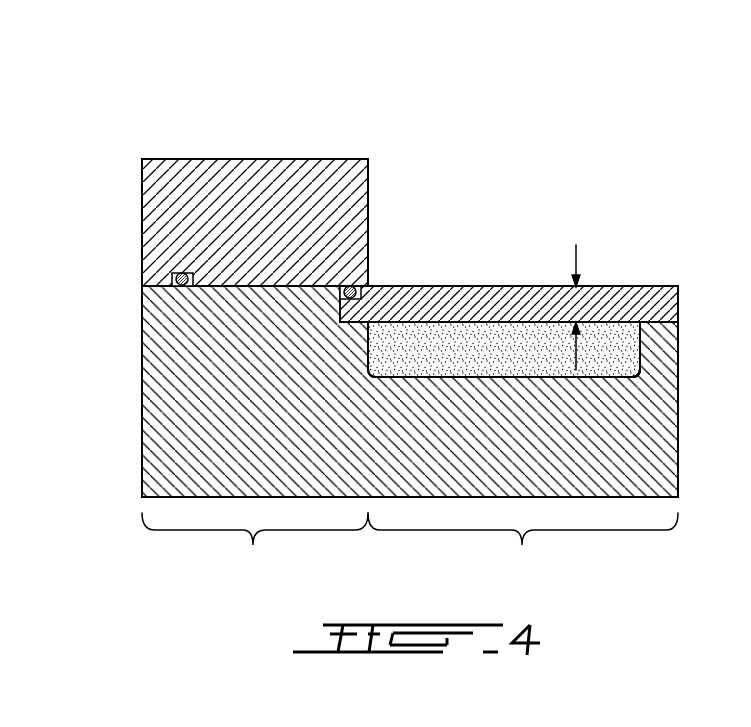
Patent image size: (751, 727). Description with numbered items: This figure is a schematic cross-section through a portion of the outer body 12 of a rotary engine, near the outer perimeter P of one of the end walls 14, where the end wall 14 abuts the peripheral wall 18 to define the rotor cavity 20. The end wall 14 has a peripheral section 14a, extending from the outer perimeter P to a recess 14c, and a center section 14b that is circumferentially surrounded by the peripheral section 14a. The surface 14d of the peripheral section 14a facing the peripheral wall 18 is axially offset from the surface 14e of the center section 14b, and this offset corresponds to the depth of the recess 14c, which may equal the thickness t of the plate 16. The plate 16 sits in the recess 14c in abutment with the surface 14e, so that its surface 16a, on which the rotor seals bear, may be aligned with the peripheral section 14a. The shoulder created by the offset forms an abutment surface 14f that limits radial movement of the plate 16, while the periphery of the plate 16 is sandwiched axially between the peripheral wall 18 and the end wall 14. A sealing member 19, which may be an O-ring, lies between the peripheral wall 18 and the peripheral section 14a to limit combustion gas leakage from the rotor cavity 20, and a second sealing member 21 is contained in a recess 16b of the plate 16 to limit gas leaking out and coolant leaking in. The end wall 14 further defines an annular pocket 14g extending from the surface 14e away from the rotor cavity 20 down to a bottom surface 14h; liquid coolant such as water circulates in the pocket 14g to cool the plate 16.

The outer body 12 is at (548, 152).
The end wall 14 is at (172, 478).
The peripheral section 14a is at (708, 447).
The center section 14b is at (523, 545).
The recess 14c is at (653, 323).
The surface of the peripheral portion 14d is at (222, 287).
The surface of the center portion 14e is at (352, 324).
The abutment surface 14f is at (340, 305).
The pocket 14g is at (616, 348).
The bottom surface of the pocket 14h is at (460, 378).
The plate 16 is at (628, 287).
The surface of the plate 16a is at (415, 286).
The recess of the plate 16b is at (350, 286).
The peripheral wall 18 is at (192, 158).
The sealing member 19 is at (172, 279).
The rotor cavity 20 is at (484, 227).
The sealing member 21 is at (350, 292).
The thickness of the plate t is at (577, 250).
The outer perimeter P is at (142, 438).